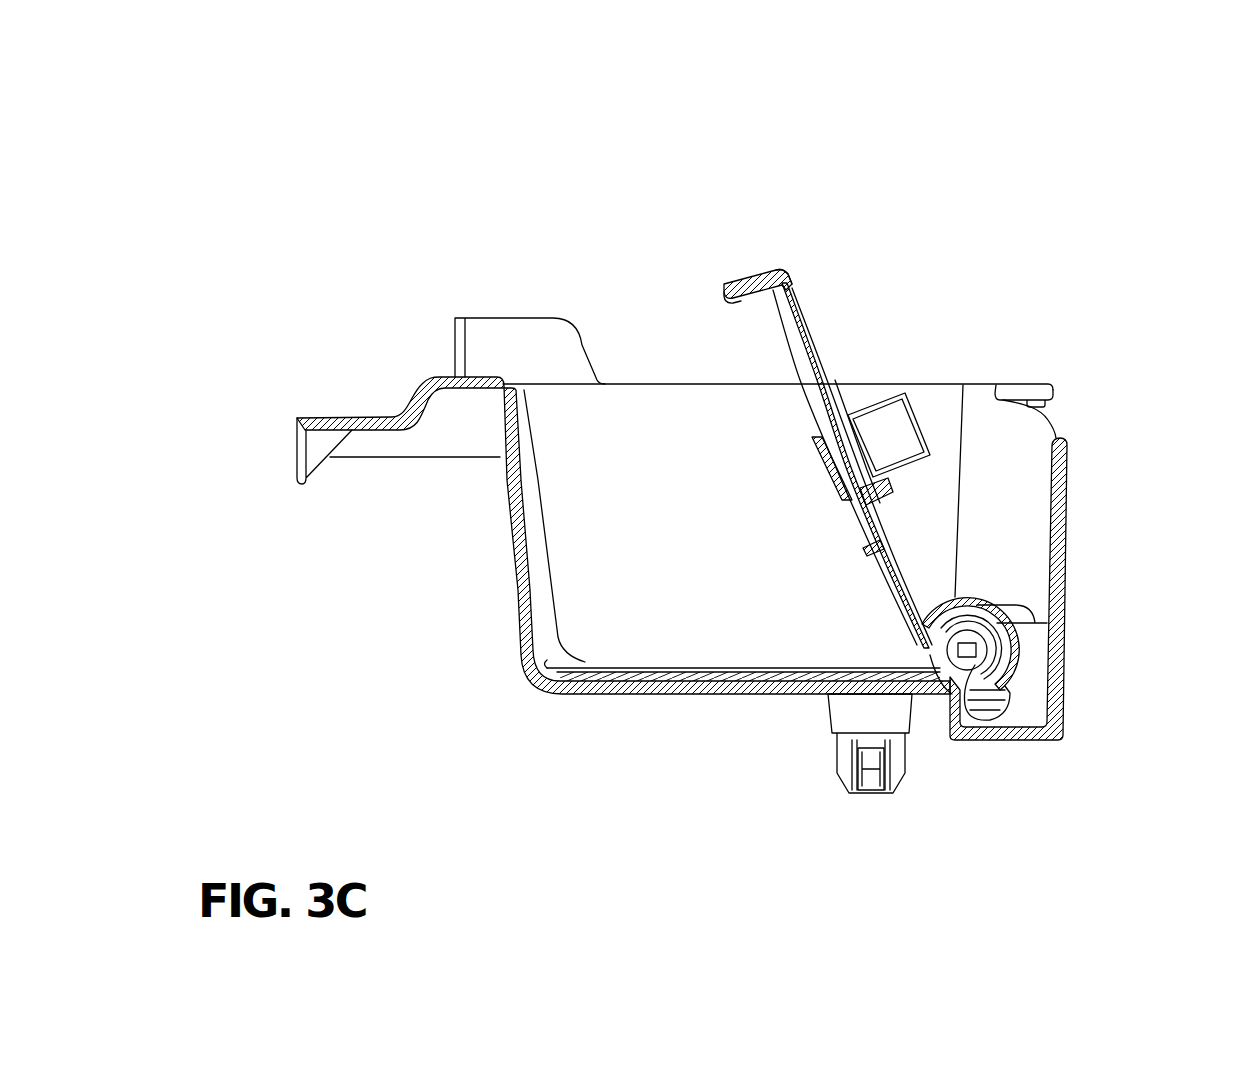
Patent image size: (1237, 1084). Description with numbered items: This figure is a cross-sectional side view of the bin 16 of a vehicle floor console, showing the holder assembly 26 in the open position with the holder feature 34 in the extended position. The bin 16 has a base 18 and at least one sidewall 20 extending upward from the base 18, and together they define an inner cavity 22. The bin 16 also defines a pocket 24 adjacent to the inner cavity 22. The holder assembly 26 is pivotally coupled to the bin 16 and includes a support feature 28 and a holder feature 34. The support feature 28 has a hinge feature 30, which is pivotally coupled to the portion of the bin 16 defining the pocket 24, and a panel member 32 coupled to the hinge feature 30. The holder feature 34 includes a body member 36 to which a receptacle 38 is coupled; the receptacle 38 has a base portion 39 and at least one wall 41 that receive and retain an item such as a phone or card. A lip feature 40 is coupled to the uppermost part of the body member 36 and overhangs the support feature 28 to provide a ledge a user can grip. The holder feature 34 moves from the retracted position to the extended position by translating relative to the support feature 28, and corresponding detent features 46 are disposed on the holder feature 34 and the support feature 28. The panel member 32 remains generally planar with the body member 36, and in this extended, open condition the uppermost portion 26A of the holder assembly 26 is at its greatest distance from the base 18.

The bin 16 is at (513, 545).
The base 18 is at (643, 672).
The sidewall 20 is at (635, 545).
The inner cavity 22 is at (675, 470).
The pocket 24 is at (1027, 490).
The holder assembly 26 is at (823, 477).
The uppermost portion 26A is at (777, 272).
The support feature 28 is at (872, 548).
The hinge feature 30 is at (1008, 678).
The panel member 32 is at (908, 577).
The holder feature 34 is at (818, 340).
The body member 36 is at (818, 385).
The receptacle 38 is at (887, 435).
The base portion 39 is at (908, 477).
The lip feature 40 is at (733, 287).
The wall 41 is at (890, 490).
The detent features 46 is at (890, 487).